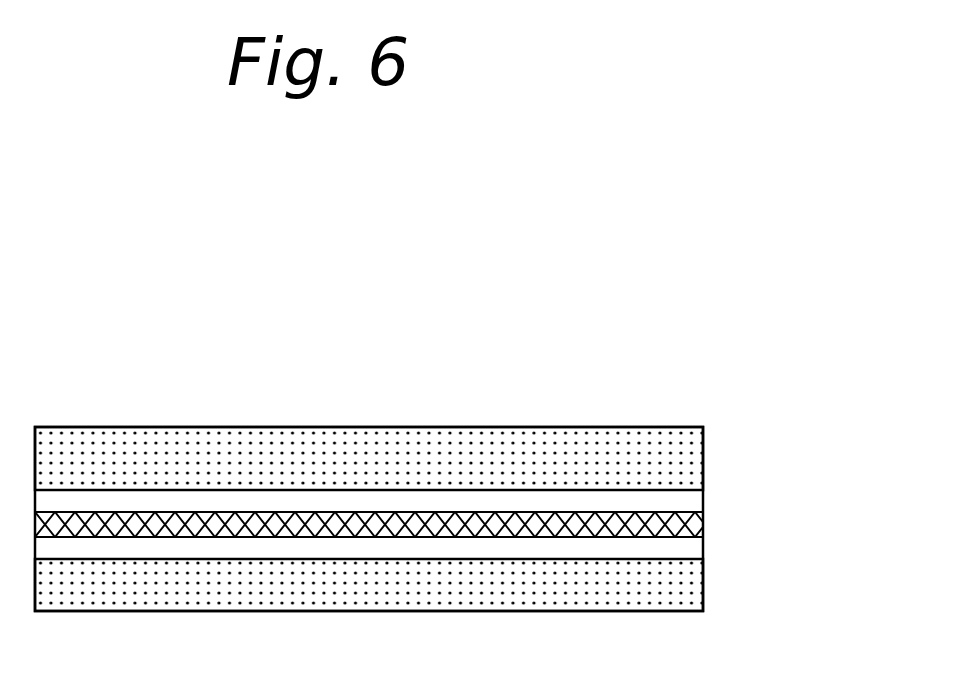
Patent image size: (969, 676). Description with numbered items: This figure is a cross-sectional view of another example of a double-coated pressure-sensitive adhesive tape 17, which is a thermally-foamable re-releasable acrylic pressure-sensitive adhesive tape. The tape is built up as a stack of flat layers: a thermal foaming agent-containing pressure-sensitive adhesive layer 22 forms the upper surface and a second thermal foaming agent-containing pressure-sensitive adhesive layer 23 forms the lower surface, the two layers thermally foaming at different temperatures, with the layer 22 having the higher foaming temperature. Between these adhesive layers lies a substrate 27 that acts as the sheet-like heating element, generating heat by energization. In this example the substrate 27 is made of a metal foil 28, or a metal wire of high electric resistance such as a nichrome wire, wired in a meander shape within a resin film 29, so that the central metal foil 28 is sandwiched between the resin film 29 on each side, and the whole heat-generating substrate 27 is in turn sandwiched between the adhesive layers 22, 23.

The double-coated pressure-sensitive adhesive tape 17 is at (550, 413).
The thermal foaming agent-containing pressure-sensitive adhesive layer 22 is at (703, 464).
The thermal foaming agent-containing pressure-sensitive adhesive layer 23 is at (703, 598).
The substrate acting as the sheet-like heating element 27 is at (808, 482).
The metal foil 28 is at (703, 527).
The resin film 29 is at (703, 504).